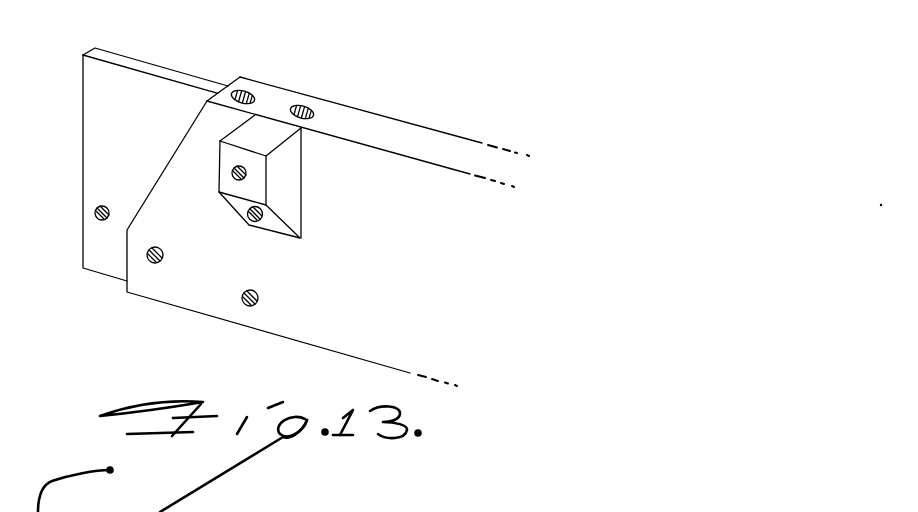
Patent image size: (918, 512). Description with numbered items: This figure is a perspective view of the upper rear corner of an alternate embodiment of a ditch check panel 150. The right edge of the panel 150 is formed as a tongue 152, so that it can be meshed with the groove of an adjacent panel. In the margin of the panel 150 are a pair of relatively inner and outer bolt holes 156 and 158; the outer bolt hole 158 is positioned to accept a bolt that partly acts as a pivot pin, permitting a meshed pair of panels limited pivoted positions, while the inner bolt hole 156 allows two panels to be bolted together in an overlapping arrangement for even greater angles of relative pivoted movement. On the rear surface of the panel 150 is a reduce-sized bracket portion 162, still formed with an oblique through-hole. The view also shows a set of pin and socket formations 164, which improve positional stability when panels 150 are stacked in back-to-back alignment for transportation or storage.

The ditch check panel 150 is at (499, 128).
The tongue 152 is at (138, 86).
The inner bolt hole 156 is at (157, 263).
The outer bolt hole 158 is at (94, 216).
The bracket portion 162 is at (284, 190).
The pin and socket formations 164 is at (232, 175).